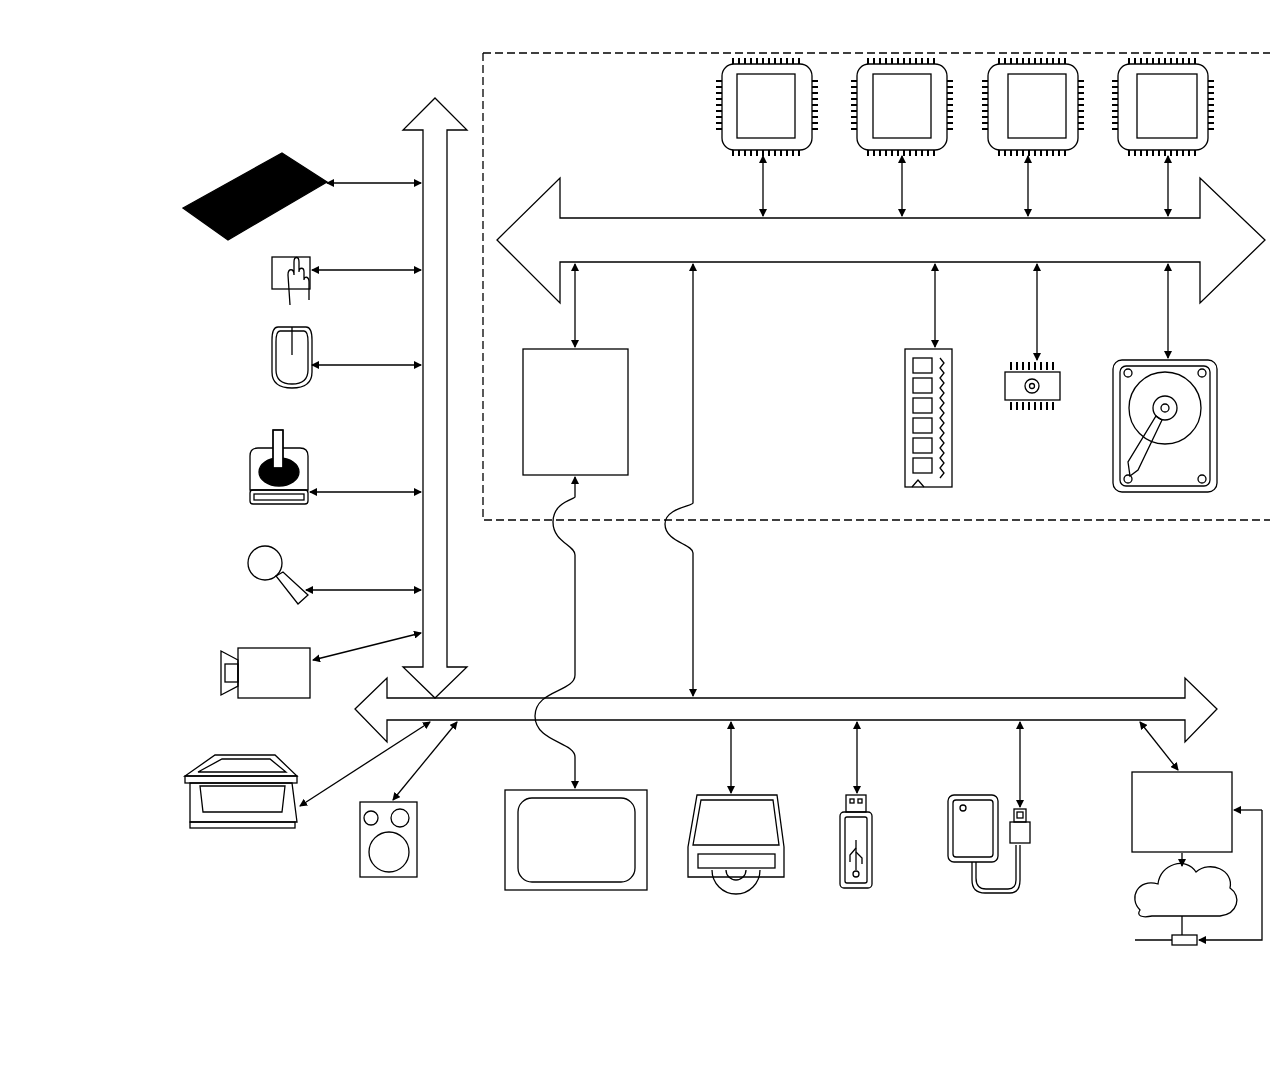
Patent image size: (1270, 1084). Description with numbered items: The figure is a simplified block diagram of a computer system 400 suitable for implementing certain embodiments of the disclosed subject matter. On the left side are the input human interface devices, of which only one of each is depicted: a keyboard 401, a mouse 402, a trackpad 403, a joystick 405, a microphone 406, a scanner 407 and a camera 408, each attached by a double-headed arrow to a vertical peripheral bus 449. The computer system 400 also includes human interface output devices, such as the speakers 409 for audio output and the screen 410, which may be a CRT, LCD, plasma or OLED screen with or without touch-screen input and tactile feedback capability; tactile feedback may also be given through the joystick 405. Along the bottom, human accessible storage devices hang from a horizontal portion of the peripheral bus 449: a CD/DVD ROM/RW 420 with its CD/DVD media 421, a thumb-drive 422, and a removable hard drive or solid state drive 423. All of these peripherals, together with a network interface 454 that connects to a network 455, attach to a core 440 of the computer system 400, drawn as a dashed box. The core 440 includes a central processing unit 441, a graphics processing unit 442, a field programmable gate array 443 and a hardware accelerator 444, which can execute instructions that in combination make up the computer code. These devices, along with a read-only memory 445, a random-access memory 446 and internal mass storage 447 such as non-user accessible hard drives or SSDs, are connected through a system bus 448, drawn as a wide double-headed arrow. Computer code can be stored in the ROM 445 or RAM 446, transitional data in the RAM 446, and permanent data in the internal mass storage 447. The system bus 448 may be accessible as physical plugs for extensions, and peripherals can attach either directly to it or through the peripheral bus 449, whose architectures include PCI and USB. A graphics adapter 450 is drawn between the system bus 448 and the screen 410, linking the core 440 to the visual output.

The computer system 400 is at (697, 499).
The keyboard 401 is at (183, 210).
The mouse 402 is at (270, 272).
The trackpad 403 is at (270, 357).
The joystick 405 is at (248, 495).
The microphone 406 is at (248, 565).
The scanner 407 is at (192, 818).
The camera 408 is at (222, 678).
The speakers 409 is at (392, 877).
The touch screen 410 is at (573, 890).
The CD/DVD ROM/RW 420 is at (768, 882).
The CD/DVD media 421 is at (718, 882).
The thumb-drive 422 is at (850, 888).
The removable hard drive or solid state drive 423 is at (945, 865).
The core 440 is at (868, 522).
The central processing unit 441 is at (767, 138).
The graphics processing unit 442 is at (902, 138).
The field programmable gate array 443 is at (1033, 138).
The hardware accelerator 444 is at (1163, 138).
The read-only memory 445 is at (1024, 412).
The random-access memory 446 is at (905, 420).
The internal mass storage 447 is at (1125, 358).
The system bus 448 is at (881, 240).
The peripheral bus 449 is at (422, 137).
The graphics adapter 450 is at (575, 526).
The network interface 454 is at (1182, 787).
The network 455 is at (1198, 877).